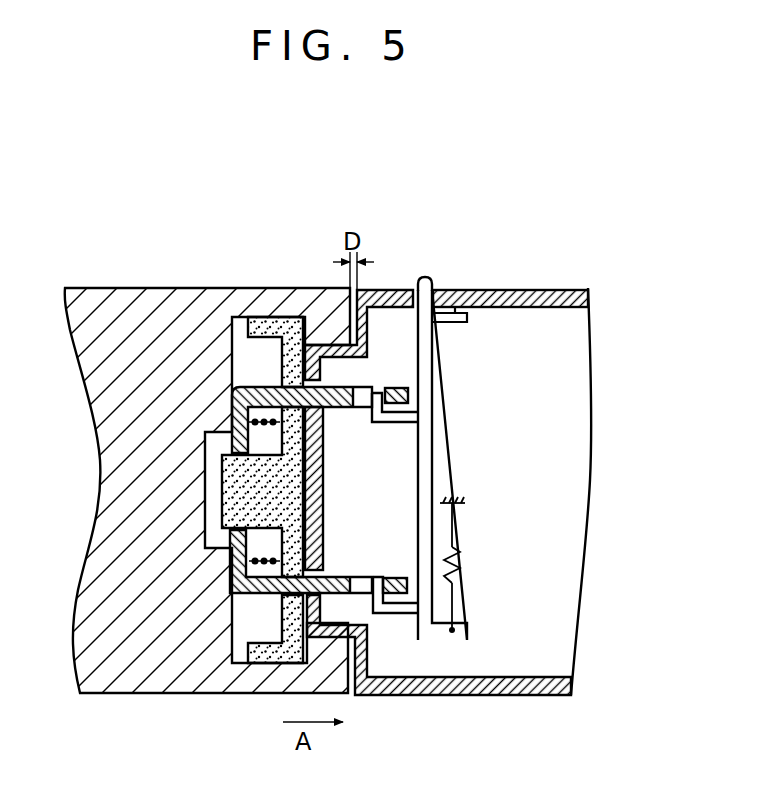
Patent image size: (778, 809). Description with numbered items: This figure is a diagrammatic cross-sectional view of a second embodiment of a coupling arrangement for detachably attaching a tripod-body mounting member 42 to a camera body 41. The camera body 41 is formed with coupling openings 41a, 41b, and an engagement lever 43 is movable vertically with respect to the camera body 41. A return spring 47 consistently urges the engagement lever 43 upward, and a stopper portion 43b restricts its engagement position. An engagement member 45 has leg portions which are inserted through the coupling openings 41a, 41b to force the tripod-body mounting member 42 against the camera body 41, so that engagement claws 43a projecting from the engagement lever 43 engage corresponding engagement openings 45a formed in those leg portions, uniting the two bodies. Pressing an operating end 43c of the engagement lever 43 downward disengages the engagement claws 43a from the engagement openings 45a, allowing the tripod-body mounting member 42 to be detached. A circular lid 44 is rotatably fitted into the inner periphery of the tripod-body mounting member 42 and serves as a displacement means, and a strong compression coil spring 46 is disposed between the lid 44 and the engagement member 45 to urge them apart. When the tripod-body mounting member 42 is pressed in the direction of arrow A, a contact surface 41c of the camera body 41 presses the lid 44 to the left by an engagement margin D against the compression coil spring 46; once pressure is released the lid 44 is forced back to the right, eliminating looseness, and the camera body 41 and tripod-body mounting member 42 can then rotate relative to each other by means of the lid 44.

The camera body 41 is at (574, 290).
The coupling opening 41a is at (322, 380).
The coupling opening 41b is at (333, 600).
The contact surface 41c is at (270, 492).
The tripod-body mounting member 42 is at (148, 302).
The engagement lever 43 is at (423, 373).
The engagement claw 43a is at (378, 392).
The stopper portion 43b is at (522, 290).
The operating end 43c is at (430, 274).
The lid 44 is at (268, 327).
The engagement member 45 is at (260, 593).
The engagement opening 45a is at (363, 392).
The compression coil spring 46 is at (245, 630).
The return spring 47 is at (462, 553).